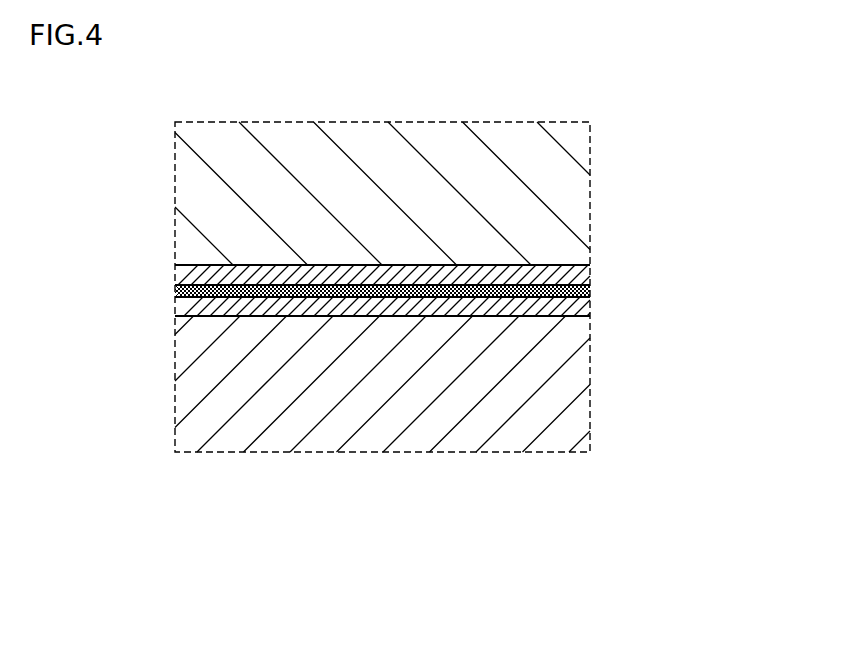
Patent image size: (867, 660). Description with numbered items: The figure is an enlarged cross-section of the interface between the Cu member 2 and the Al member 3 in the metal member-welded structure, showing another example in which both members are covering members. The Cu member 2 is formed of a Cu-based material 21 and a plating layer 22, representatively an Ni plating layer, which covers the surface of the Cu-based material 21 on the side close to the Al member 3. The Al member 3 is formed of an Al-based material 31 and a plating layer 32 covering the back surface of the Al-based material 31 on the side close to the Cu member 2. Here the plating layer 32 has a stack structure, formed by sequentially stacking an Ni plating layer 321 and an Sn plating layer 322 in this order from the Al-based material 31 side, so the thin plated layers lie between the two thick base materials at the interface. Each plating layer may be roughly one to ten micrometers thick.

The Cu member 2 is at (453, 374).
The Cu-based material 21 is at (689, 335).
The plating layer 22 is at (590, 310).
The Al member 3 is at (485, 219).
The Al-based material 31 is at (578, 185).
The plating layer 32 is at (465, 272).
The Ni plating layer 321 is at (590, 275).
The Sn plating layer 322 is at (590, 287).